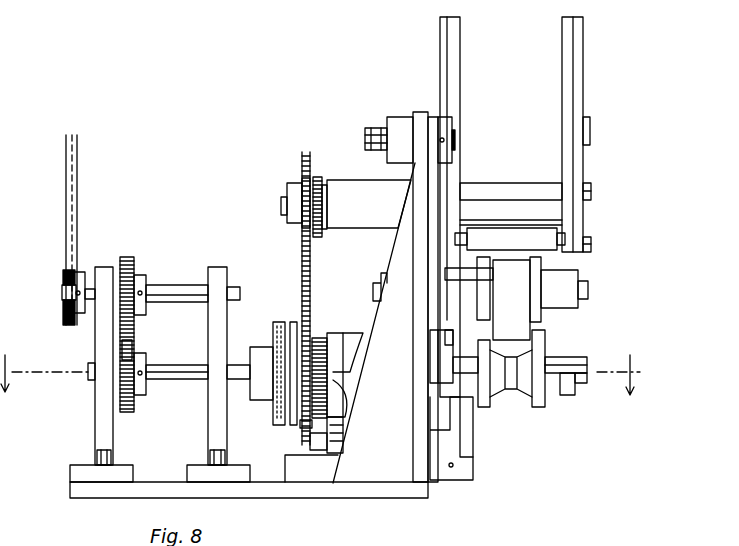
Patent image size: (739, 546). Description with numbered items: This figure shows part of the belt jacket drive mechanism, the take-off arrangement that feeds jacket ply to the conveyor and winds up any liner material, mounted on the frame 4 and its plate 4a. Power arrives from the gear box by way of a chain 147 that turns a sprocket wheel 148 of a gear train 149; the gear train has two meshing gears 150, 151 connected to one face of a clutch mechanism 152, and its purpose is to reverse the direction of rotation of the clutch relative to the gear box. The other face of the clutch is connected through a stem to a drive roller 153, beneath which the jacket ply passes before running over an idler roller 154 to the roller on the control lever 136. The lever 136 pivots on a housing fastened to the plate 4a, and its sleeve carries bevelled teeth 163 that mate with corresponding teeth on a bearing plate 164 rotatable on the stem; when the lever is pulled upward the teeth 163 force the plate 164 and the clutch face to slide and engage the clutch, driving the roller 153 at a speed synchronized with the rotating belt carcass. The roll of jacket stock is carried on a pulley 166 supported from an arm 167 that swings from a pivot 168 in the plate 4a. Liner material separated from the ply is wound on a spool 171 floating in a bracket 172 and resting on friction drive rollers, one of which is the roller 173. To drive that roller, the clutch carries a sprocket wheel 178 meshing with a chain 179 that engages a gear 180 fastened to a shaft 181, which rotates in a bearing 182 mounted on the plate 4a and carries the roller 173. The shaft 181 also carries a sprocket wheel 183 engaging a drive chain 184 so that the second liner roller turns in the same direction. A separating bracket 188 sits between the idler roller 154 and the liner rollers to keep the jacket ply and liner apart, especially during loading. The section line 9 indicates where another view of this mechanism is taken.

The frame 4 is at (413, 165).
The plate 4a is at (423, 112).
The section line 9 is at (327, 375).
The control lever 136 is at (352, 340).
The chain 147 is at (73, 208).
The sprocket wheel 148 is at (68, 322).
The gear train 149 is at (180, 381).
The gear 150 is at (130, 257).
The gear 151 is at (134, 350).
The clutch mechanism 152 is at (276, 322).
The drive roller 153 is at (560, 400).
The idler roller 154 is at (575, 278).
The bevelled teeth 163 is at (348, 390).
The bearing plate 164 is at (325, 338).
The pulley 166 is at (553, 350).
The arm 167 is at (433, 362).
The pivot 168 is at (400, 117).
The spool 171 is at (510, 188).
The bracket 172 is at (584, 122).
The friction drive roller 173 is at (560, 234).
The sprocket wheel 178 is at (303, 427).
The chain 179 is at (311, 267).
The gear 180 is at (300, 182).
The shaft 181 is at (286, 202).
The bearing 182 is at (363, 229).
The sprocket wheel 183 is at (315, 177).
The drive chain 184 is at (324, 185).
The separating bracket 188 is at (489, 298).